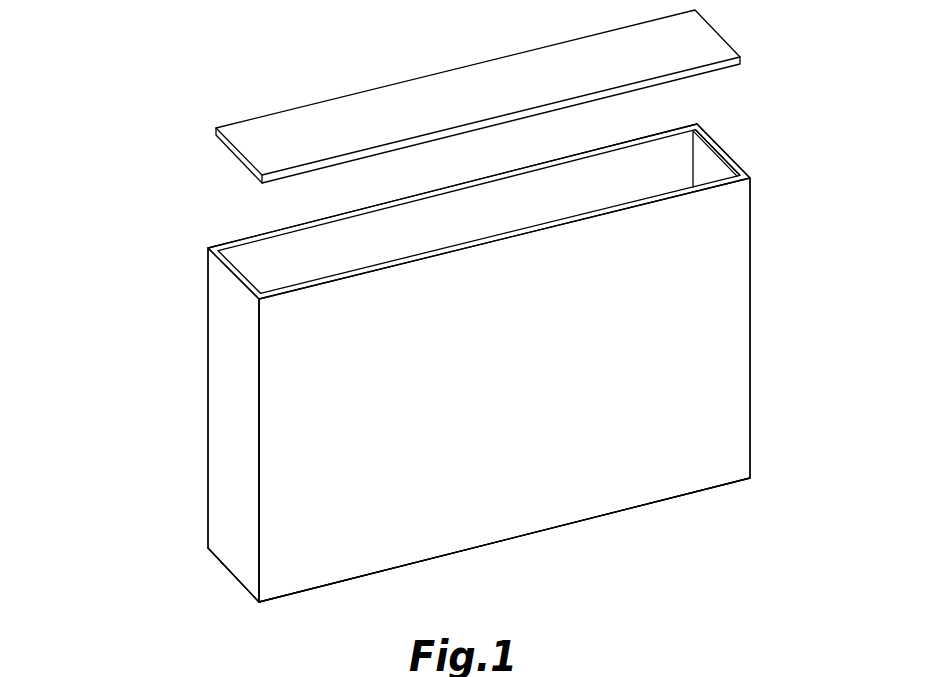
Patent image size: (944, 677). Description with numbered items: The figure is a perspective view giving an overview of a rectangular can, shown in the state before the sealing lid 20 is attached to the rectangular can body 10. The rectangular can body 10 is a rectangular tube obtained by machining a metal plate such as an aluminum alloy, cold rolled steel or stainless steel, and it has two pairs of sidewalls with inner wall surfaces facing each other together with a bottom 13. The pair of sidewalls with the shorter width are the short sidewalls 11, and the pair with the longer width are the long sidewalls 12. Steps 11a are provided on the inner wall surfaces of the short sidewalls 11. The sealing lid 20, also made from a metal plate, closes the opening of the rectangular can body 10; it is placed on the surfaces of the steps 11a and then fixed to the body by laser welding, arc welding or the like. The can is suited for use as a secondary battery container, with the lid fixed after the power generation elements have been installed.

The rectangular can body 10 is at (450, 357).
The short sidewalls 11 is at (230, 467).
The steps 11a is at (703, 152).
The long sidewalls 12 is at (483, 213).
The bottom 13 is at (505, 538).
The sealing lid 20 is at (410, 108).